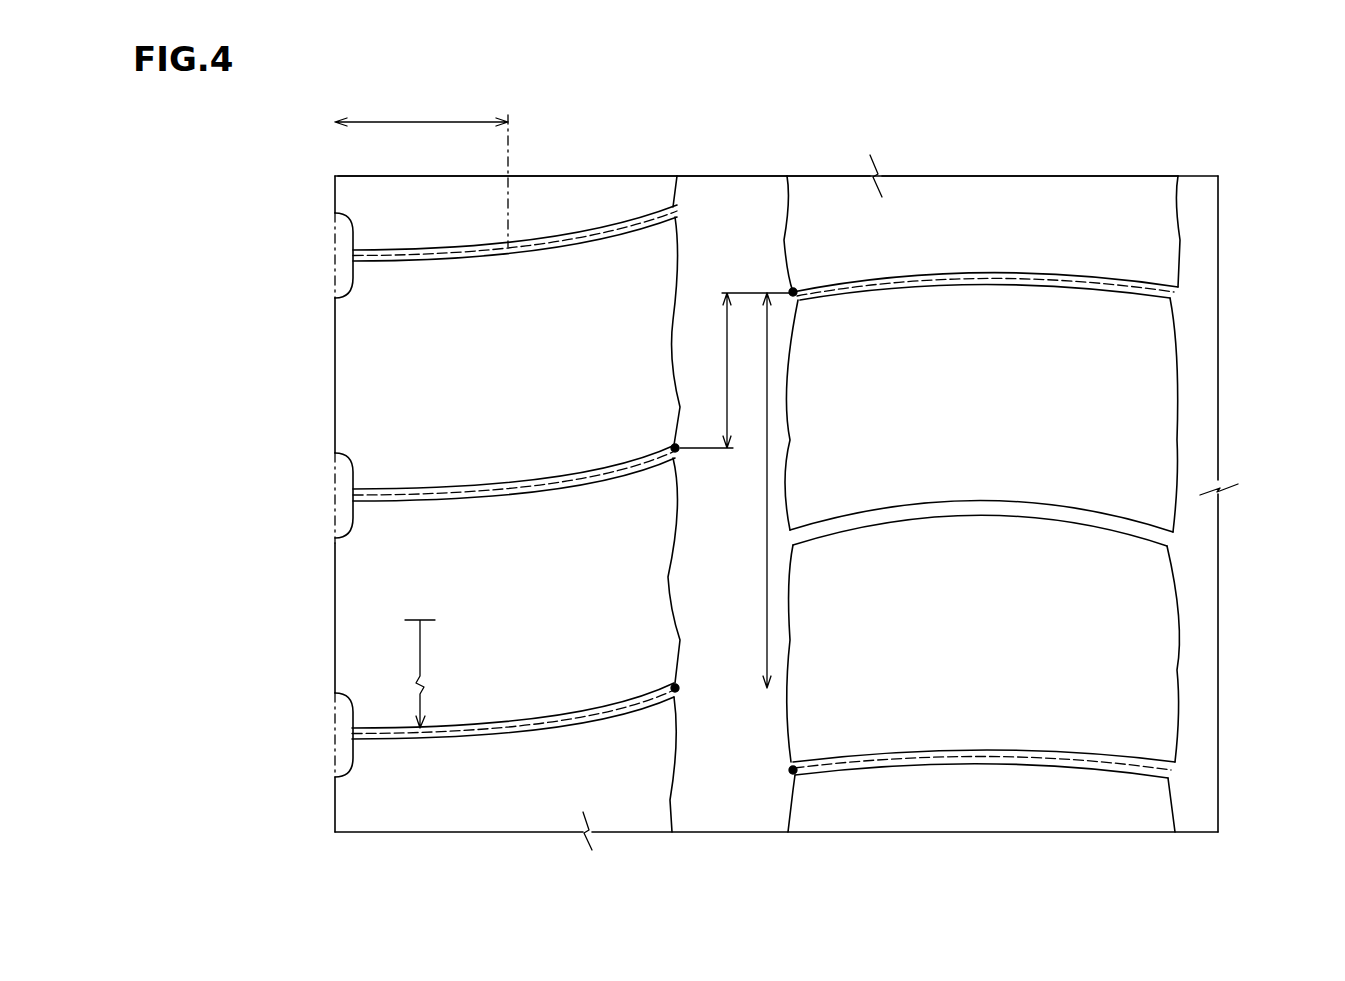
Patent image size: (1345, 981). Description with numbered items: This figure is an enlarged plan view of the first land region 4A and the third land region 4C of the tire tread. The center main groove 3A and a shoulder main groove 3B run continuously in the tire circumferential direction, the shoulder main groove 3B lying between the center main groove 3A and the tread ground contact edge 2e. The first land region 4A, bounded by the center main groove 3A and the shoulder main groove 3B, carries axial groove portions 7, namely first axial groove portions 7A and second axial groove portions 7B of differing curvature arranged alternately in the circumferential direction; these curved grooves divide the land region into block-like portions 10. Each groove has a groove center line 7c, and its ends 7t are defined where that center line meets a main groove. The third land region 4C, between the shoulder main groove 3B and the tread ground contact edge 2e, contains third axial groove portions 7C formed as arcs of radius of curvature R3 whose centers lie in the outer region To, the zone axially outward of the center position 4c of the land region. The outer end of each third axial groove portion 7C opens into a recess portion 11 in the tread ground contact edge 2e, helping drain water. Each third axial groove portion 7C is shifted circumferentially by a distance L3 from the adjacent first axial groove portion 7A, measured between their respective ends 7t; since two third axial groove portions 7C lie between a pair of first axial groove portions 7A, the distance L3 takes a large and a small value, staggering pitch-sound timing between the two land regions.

The tread ground contact edge 2e is at (335, 470).
The recess portion 11 is at (345, 715).
The block-like portion 10 is at (1078, 217).
The third land region 4C is at (591, 279).
The center position 4c is at (508, 198).
The outer region To is at (421, 107).
The shoulder main groove 3B is at (729, 206).
The first land region 4A is at (976, 202).
The center main groove 3A is at (1201, 202).
The third axial groove portion 7C is at (448, 511).
The radius of curvature R3 is at (435, 674).
The axial groove portion 7 is at (1062, 504).
The first axial groove portion 7A is at (1121, 272).
The second axial groove portion 7B is at (1054, 518).
The groove center line 7c is at (950, 758).
The end of axial groove portion 7t is at (677, 692).
The distance L3 is at (736, 490).